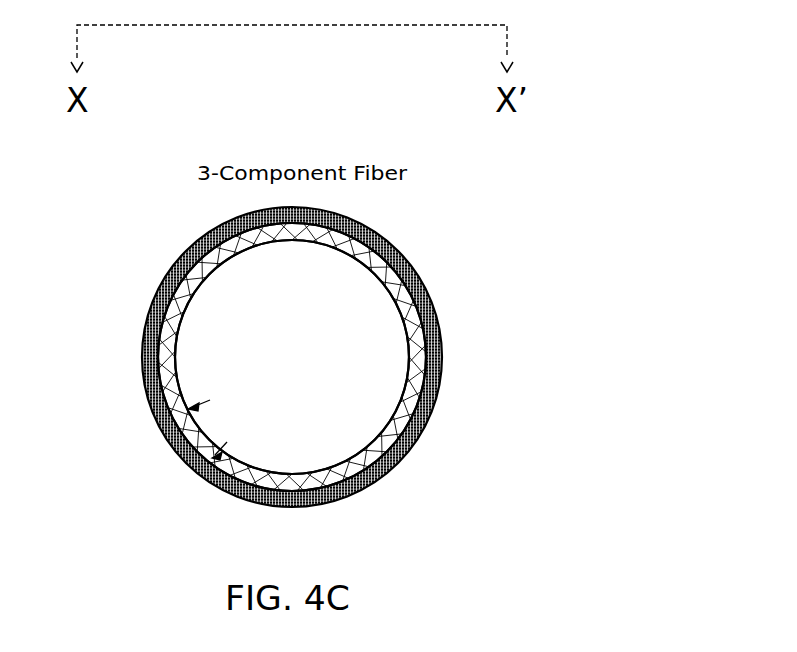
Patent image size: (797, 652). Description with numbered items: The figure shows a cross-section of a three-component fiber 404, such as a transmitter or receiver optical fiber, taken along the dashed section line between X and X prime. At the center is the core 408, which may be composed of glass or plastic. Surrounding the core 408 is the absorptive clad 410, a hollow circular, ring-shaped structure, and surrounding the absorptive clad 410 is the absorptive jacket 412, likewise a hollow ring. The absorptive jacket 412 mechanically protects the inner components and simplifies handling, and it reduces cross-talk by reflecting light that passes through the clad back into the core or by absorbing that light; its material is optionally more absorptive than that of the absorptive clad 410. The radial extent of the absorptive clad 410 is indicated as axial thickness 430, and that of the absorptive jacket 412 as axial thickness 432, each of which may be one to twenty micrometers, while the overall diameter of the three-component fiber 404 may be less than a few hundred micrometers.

The 3-component fiber 404 is at (162, 260).
The core 408 is at (342, 273).
The absorptive clad 410 is at (418, 372).
The absorptive jacket 412 is at (382, 470).
The axial thickness 430 is at (168, 422).
The axial thickness 432 is at (200, 476).